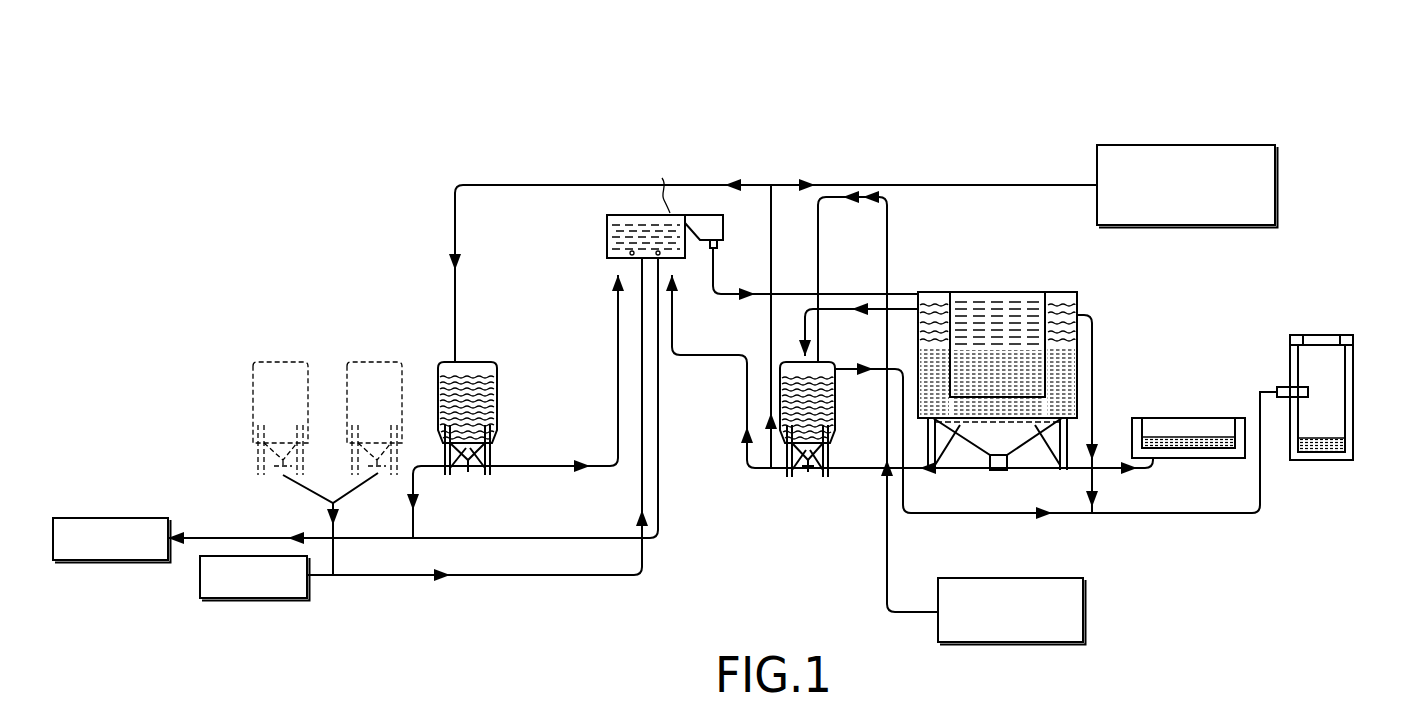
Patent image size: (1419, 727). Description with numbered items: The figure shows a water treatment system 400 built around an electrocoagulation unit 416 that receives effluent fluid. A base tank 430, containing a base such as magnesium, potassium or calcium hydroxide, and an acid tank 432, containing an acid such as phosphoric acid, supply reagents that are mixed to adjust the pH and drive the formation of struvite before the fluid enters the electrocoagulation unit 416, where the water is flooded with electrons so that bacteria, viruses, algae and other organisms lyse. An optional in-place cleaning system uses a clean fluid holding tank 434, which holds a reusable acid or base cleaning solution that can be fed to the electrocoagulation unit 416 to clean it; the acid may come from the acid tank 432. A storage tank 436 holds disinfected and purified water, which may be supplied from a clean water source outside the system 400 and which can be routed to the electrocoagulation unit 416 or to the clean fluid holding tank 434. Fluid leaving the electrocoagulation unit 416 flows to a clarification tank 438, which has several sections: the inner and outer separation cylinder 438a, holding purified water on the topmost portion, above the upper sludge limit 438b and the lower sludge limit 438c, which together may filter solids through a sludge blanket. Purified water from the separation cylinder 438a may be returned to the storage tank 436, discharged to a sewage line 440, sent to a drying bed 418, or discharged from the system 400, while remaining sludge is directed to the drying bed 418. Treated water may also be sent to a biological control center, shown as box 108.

The system 400 is at (942, 98).
The treated water to biological control center 108 is at (1275, 185).
The electrocoagulation unit 416 is at (723, 220).
The drying bed 418 is at (1197, 423).
The base tank 430 is at (255, 362).
The acid tank 432 is at (352, 362).
The clean fluid holding tank 434 is at (478, 362).
The storage tank 436 is at (800, 362).
The clarification tank 438 is at (1023, 290).
The inner and outer separation cylinder 438a is at (1047, 323).
The upper sludge limit 438b is at (1067, 347).
The lower sludge limit 438c is at (1068, 375).
The sewage line 440 is at (1340, 367).